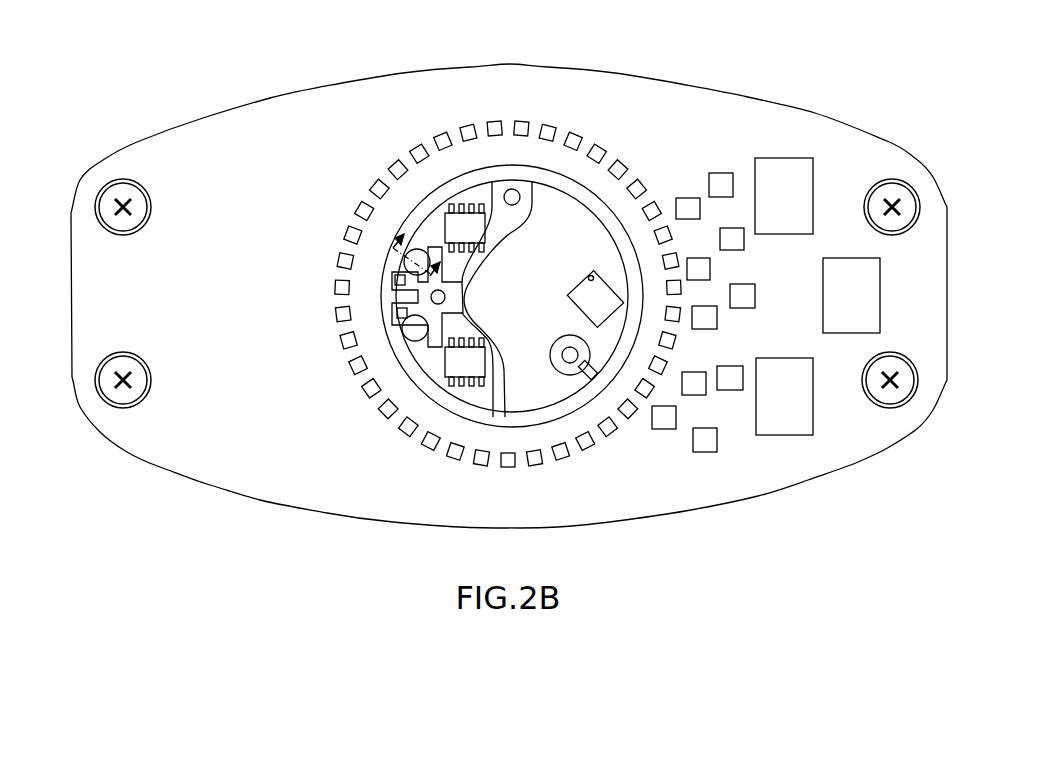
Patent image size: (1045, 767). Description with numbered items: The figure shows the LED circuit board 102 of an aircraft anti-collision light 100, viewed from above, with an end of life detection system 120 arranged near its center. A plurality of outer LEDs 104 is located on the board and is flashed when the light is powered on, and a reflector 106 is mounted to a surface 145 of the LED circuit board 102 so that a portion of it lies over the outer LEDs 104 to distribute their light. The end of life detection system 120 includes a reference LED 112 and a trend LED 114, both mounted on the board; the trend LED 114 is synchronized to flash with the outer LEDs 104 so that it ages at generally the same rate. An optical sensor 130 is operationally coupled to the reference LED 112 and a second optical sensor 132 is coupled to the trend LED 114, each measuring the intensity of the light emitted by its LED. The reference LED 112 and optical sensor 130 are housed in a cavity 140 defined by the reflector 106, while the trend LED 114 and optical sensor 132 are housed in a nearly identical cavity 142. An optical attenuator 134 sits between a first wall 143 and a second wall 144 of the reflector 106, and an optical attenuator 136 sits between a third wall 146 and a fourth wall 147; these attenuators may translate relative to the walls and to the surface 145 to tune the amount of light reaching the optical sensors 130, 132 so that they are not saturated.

The aircraft anti-collision light 100 is at (72, 64).
The LED circuit board 102 is at (338, 96).
The outer LEDs 104 is at (494, 126).
The reflector 106 is at (620, 213).
The reference LED 112 is at (397, 318).
The trend LED 114 is at (392, 283).
The end of life detection system 120 is at (471, 311).
The optical sensor 130 is at (465, 357).
The optical sensor 132 is at (465, 232).
The optical attenuator 134 is at (424, 408).
The optical attenuator 136 is at (403, 270).
The cavity 140 is at (455, 389).
The cavity 142 is at (430, 214).
The first wall 143 is at (415, 350).
The second wall 144 is at (472, 320).
The surface 145 is at (313, 442).
The third wall 146 is at (398, 228).
The fourth wall 147 is at (456, 208).